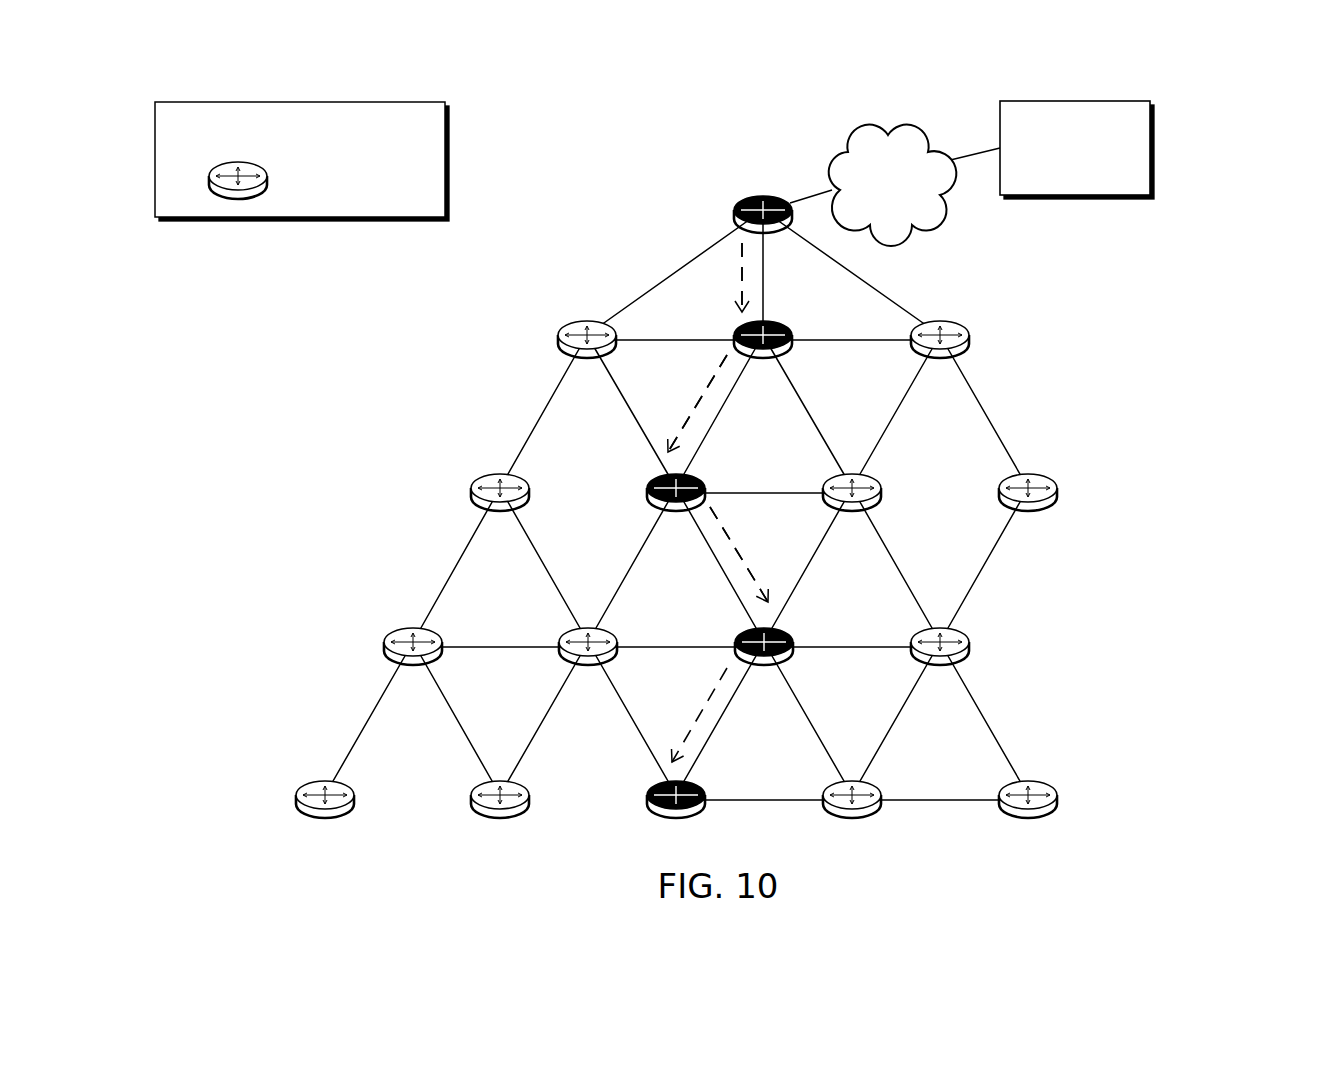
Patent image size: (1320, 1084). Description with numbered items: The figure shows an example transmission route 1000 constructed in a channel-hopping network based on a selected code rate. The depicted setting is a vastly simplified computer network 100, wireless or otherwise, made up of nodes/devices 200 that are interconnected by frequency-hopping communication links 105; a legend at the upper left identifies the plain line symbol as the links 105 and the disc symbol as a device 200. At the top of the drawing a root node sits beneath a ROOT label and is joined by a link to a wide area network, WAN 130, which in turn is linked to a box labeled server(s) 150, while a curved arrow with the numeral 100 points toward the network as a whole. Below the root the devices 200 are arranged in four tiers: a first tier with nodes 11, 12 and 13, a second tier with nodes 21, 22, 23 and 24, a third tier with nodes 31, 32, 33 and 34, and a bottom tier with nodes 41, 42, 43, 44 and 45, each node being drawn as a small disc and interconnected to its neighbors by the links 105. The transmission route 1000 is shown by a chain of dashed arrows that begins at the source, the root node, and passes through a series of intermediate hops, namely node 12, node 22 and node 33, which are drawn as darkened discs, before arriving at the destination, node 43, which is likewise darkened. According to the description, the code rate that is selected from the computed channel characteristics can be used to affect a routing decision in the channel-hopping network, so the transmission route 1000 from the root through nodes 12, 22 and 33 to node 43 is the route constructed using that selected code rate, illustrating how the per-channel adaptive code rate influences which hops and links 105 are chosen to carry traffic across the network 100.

The computer network 100 is at (1186, 157).
The frequency-hopping communication links 105 is at (210, 131).
The WAN 130 is at (871, 203).
The server(s) 150 is at (1059, 172).
The nodes/devices 200 is at (308, 180).
The transmission route 1000 is at (713, 382).
The node 11 is at (587, 359).
The device 12 is at (763, 359).
The device 13 is at (940, 359).
The device 21 is at (500, 511).
The node 22 is at (676, 511).
The device 23 is at (852, 511).
The device 24 is at (1028, 511).
The device 31 is at (413, 665).
The device 32 is at (588, 665).
The node 33 is at (764, 665).
The device 34 is at (940, 665).
The device 41 is at (325, 817).
The device 42 is at (500, 817).
The node 43 is at (676, 817).
The node 44 is at (852, 817).
The device 45 is at (1028, 817).